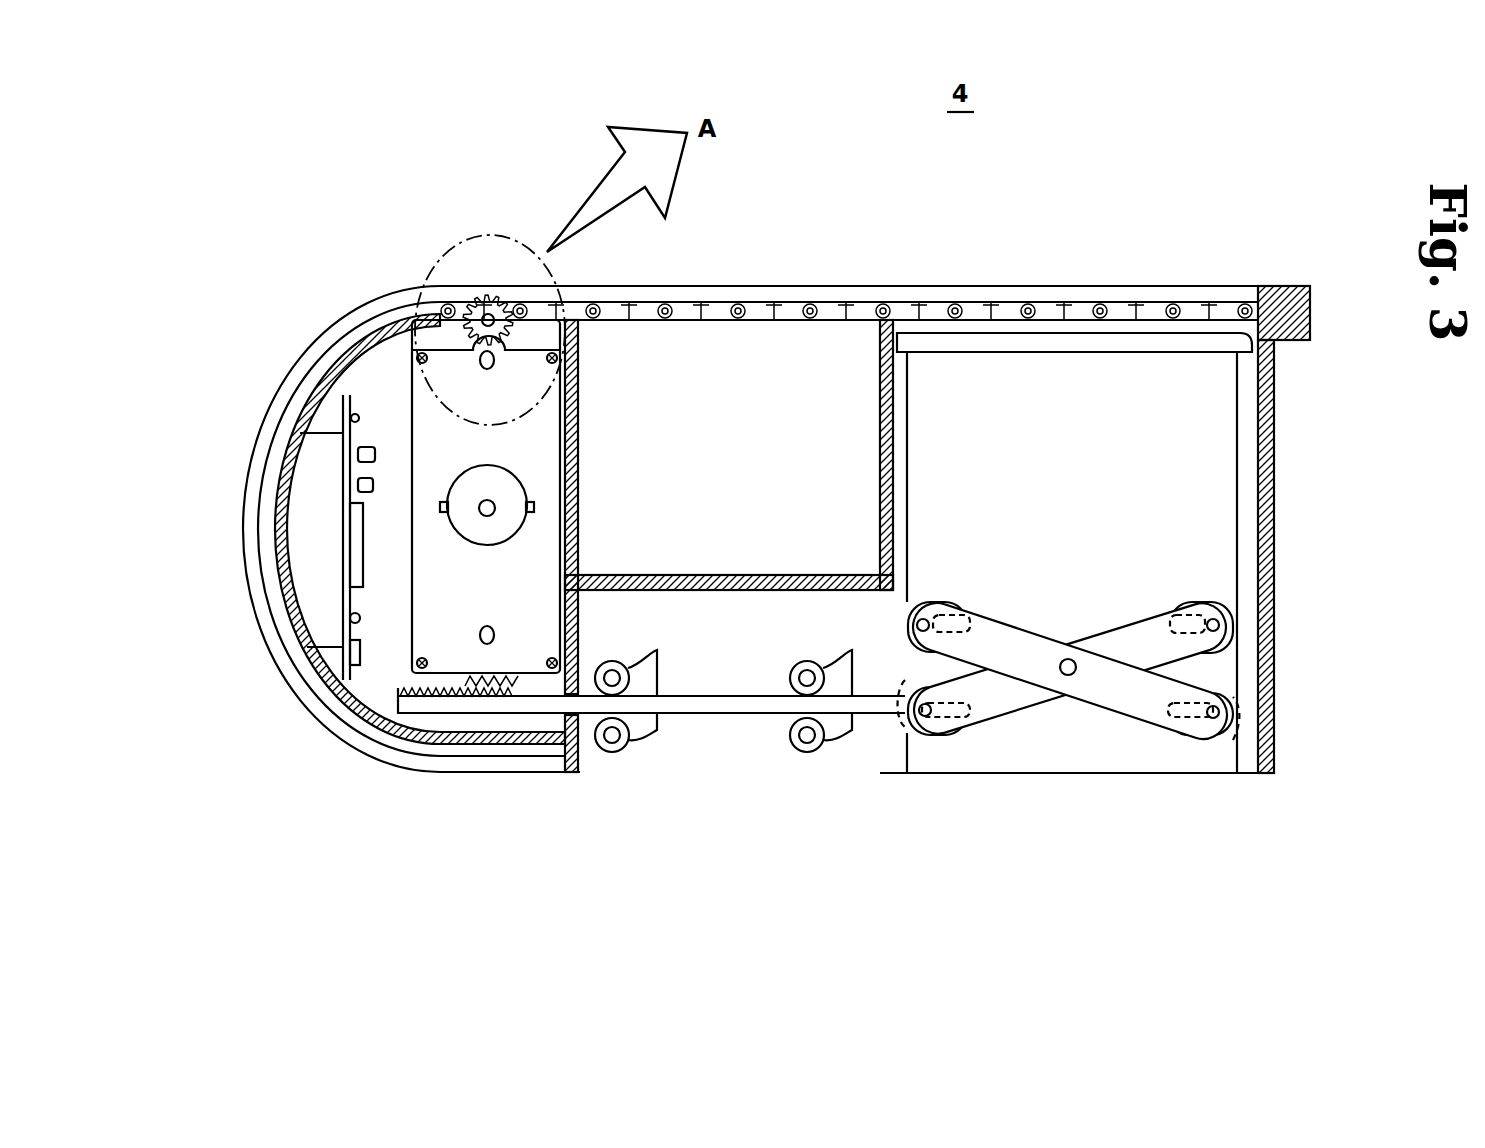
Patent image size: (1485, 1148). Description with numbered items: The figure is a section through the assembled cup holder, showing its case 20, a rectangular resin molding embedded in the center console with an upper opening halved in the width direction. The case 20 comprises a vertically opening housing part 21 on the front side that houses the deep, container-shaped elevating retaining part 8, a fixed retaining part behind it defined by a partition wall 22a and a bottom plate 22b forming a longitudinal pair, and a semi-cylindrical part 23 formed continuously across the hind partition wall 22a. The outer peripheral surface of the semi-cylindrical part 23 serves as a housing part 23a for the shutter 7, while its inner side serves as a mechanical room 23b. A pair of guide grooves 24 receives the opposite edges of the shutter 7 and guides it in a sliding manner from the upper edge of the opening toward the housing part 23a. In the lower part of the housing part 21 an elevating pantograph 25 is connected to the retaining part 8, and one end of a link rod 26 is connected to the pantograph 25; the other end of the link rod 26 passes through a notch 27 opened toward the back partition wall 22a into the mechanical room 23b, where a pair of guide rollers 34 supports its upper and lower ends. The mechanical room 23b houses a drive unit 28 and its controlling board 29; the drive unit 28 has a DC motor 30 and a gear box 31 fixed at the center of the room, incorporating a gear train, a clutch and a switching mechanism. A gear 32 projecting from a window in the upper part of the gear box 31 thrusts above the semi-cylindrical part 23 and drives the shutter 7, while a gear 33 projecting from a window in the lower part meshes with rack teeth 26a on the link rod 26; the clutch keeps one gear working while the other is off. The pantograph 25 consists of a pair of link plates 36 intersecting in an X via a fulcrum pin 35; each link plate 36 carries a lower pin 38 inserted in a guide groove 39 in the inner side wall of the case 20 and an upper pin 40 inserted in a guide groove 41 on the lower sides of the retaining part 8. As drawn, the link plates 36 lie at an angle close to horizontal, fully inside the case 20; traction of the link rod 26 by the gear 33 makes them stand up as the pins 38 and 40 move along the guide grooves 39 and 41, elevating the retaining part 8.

The shutter 7 is at (800, 297).
The elevating retaining part 8 is at (722, 400).
The case 20 is at (988, 286).
The housing part 21 is at (1250, 542).
The partition wall 22a is at (578, 455).
The bottom plate 22b is at (740, 575).
The semi-cylindrical part 23 is at (340, 580).
The housing part for the shutter 23a is at (273, 527).
The mechanical room 23b is at (380, 627).
The guide grooves 24 is at (320, 370).
The elevating pantograph 25 is at (1150, 672).
The link rod 26 is at (720, 716).
The rack teeth 26a is at (447, 696).
The notch 27 is at (580, 690).
The drive unit 28 is at (523, 555).
The controlling board 29 is at (343, 577).
The DC motor 30 is at (510, 493).
The gear box 31 is at (457, 560).
The gear 32 is at (578, 355).
The gear 33 is at (493, 673).
The guide rollers 34 is at (657, 660).
The fulcrum pin 35 is at (1062, 658).
The link plates 36 is at (960, 712).
The lower pin 38 is at (905, 727).
The guide grooves 39 is at (945, 727).
The upper pin 40 is at (933, 603).
The guide grooves 41 is at (962, 612).